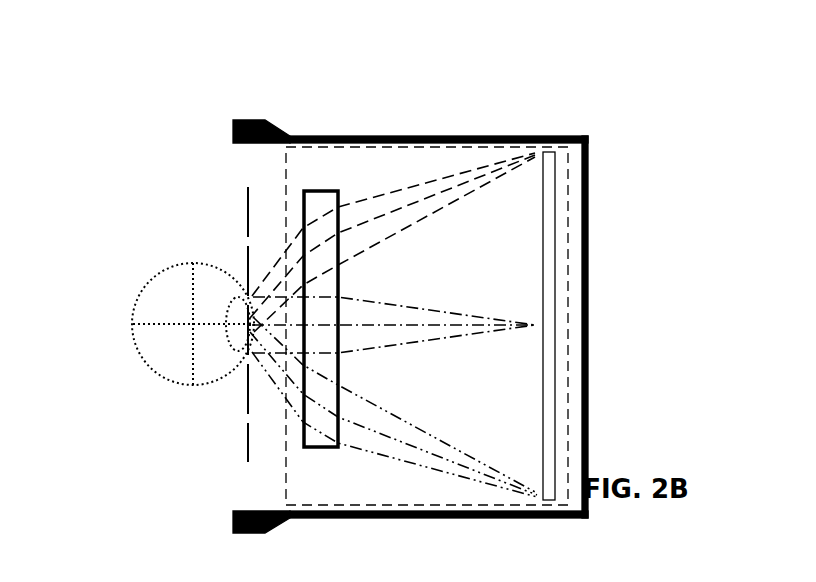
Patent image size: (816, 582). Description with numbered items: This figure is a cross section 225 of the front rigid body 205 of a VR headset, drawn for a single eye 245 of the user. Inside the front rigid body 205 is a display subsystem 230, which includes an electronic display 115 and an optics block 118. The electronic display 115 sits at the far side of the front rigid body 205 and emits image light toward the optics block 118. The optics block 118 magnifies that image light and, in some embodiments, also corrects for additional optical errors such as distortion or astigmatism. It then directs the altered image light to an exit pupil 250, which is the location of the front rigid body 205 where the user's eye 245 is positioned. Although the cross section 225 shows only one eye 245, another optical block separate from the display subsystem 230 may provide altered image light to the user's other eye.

The cross section 225 is at (376, 286).
The front rigid body 205 is at (562, 128).
The display subsystem 230 is at (275, 426).
The optics block 118 is at (294, 196).
The electronic display 115 is at (565, 246).
The eye 245 is at (154, 265).
The exit pupil 250 is at (236, 452).